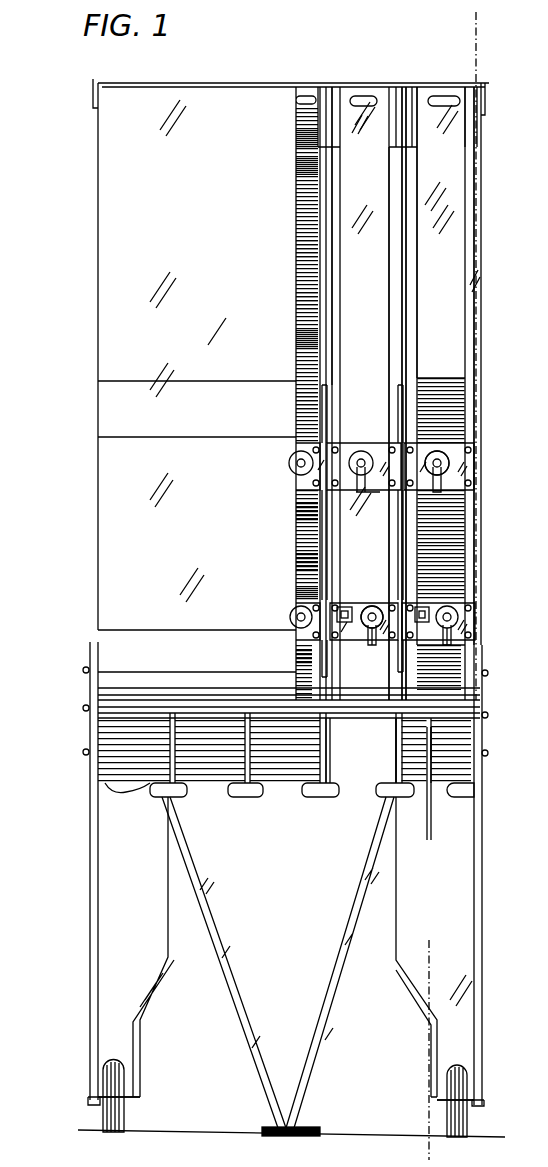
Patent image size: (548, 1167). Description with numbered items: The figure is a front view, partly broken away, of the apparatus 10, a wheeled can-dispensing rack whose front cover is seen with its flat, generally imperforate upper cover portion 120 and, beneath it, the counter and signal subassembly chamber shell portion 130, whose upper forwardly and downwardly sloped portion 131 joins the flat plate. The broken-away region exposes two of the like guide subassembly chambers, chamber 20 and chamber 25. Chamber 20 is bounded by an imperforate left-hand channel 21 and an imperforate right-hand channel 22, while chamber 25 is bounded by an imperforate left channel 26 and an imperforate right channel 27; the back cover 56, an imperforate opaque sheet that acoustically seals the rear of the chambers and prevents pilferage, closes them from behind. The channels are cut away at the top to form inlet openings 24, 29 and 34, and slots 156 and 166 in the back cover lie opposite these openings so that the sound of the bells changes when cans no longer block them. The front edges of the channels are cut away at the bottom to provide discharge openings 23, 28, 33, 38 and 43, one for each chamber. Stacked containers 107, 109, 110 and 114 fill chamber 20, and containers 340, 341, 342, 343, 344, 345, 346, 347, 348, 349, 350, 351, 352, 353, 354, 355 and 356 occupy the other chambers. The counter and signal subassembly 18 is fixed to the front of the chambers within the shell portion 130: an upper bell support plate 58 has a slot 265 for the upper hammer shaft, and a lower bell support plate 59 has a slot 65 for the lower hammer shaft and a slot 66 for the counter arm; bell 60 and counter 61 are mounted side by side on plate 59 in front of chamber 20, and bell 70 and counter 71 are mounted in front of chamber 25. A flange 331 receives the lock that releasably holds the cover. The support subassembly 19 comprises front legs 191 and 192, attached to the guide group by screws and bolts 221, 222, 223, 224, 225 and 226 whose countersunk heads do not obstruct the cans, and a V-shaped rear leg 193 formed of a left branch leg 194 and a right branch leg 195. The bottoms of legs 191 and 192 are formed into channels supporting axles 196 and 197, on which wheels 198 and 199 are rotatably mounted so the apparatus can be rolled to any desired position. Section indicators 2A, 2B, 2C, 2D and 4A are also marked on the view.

The apparatus 10 is at (86, 307).
The upper guide subassembly chamber cover portion 120 is at (163, 257).
The counter and signal subassembly chamber shell portion 130 is at (133, 573).
The upper forwardly and downwardly sloped portion 131 is at (128, 404).
The inlet opening 34 is at (318, 96).
The container 356 is at (298, 131).
The container 355 is at (300, 163).
The container 354 is at (297, 246).
The container 353 is at (297, 301).
The container 352 is at (297, 340).
The container 351 is at (297, 402).
The container 350 is at (306, 442).
The container 349 is at (297, 513).
The container 348 is at (297, 563).
The container 347 is at (297, 598).
The container 346 is at (296, 658).
The guide subassembly chamber 25 is at (371, 275).
The slot 166 is at (366, 98).
The inlet opening 29 is at (383, 116).
The imperforate right channel 27 is at (403, 170).
The imperforate left channel 26 is at (338, 368).
The flange 331 is at (330, 398).
The guide subassembly chamber 20 is at (446, 275).
The slot 156 is at (438, 98).
The inlet opening 24 is at (462, 118).
The imperforate left-hand channel 21 is at (410, 183).
The back cover 56 is at (440, 215).
The imperforate right-hand channel 22 is at (466, 349).
The section line 2D is at (483, 34).
The container 107 is at (452, 406).
The container 109 is at (447, 508).
The container 110 is at (450, 564).
The counter and signal subassembly 18 is at (477, 607).
The upper bell support plate 58 is at (463, 463).
The slot 265 is at (442, 488).
The bell 60 is at (460, 622).
The bell 70 is at (362, 607).
The counter 61 is at (412, 608).
The lower bell support plate 59 is at (456, 640).
The counter 71 is at (340, 661).
The slot 66 is at (428, 645).
The slot 65 is at (450, 630).
The container 345 is at (270, 742).
The container 343 is at (145, 722).
The container 344 is at (192, 722).
The container 340 is at (292, 758).
The container 114 is at (455, 773).
The section line 2B is at (426, 734).
The section line 2C is at (432, 733).
The discharge opening 23 is at (428, 802).
The section line 2A is at (439, 803).
The container 342 is at (135, 792).
The discharge opening 43 is at (122, 804).
The container 341 is at (223, 793).
The discharge opening 33 is at (268, 796).
The discharge opening 28 is at (365, 798).
The discharge opening 38 is at (206, 810).
The support subassembly 19 is at (74, 1032).
The screw or bolt 221 is at (83, 672).
The screw or bolt 222 is at (83, 708).
The screw or bolt 223 is at (83, 752).
The screw or bolt 224 is at (488, 673).
The screw or bolt 225 is at (488, 715).
The screw or bolt 226 is at (488, 753).
The front leg 191 is at (140, 917).
The front leg 192 is at (463, 917).
The right branch leg 195 is at (240, 1010).
The left branch leg 194 is at (353, 956).
The V-shaped rear leg 193 is at (316, 1088).
The axle 196 is at (128, 1100).
The wheel 198 is at (124, 1124).
The axle 197 is at (432, 1103).
The wheel 199 is at (468, 1124).
The section line 4A is at (440, 1154).